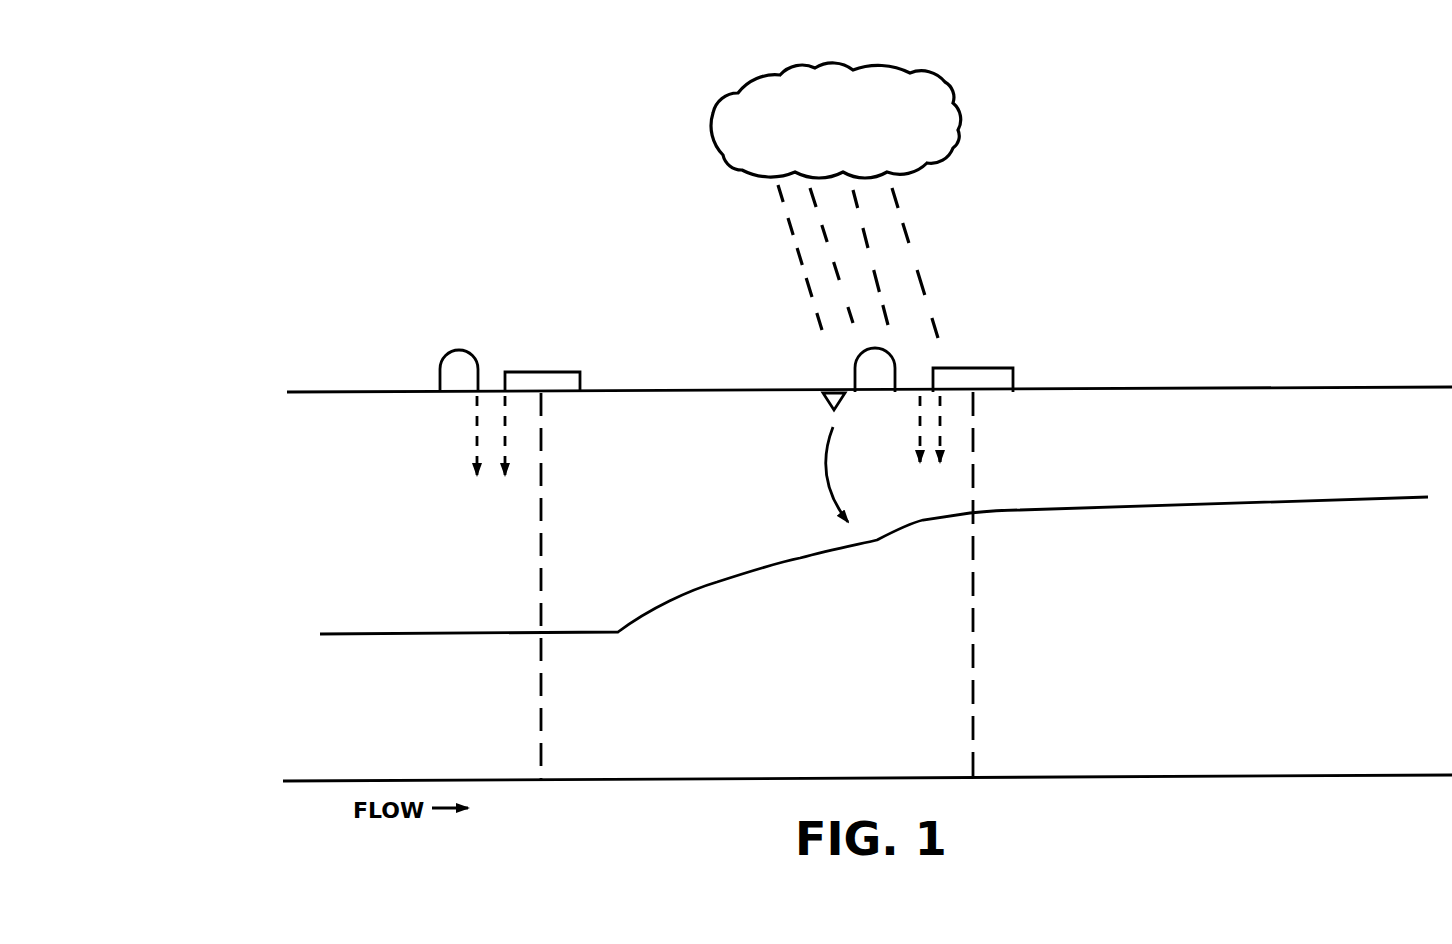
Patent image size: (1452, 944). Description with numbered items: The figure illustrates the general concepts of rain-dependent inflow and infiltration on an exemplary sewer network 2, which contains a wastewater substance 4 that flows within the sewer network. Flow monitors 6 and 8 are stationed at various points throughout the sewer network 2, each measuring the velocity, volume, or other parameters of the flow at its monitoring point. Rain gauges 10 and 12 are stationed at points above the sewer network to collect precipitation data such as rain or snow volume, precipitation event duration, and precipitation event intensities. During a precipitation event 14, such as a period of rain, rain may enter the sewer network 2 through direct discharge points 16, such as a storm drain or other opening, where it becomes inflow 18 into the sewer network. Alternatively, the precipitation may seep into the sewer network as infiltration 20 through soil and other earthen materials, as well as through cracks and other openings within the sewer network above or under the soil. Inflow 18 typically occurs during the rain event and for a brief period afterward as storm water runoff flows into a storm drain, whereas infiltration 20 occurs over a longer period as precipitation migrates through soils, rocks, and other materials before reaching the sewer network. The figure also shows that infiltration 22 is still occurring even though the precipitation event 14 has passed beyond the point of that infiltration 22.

The sewer network 2 is at (236, 421).
The wastewater substance 4 is at (300, 637).
The flow monitor 6 is at (582, 358).
The flow monitor 8 is at (1026, 366).
The rain gauge 10 is at (428, 371).
The rain gauge 12 is at (840, 366).
The precipitation event 14 is at (930, 217).
The direct discharge point 16 is at (810, 407).
The inflow 18 is at (812, 493).
The infiltration 20 is at (928, 450).
The infiltration 22 is at (492, 458).